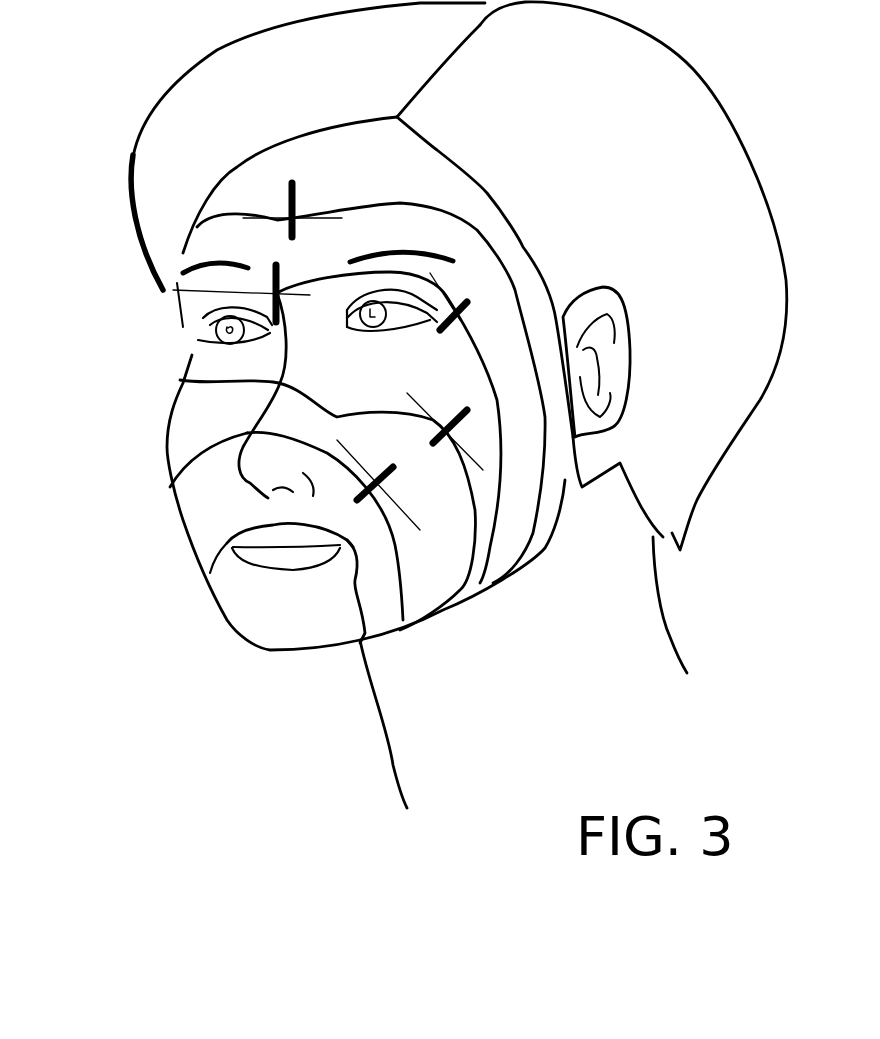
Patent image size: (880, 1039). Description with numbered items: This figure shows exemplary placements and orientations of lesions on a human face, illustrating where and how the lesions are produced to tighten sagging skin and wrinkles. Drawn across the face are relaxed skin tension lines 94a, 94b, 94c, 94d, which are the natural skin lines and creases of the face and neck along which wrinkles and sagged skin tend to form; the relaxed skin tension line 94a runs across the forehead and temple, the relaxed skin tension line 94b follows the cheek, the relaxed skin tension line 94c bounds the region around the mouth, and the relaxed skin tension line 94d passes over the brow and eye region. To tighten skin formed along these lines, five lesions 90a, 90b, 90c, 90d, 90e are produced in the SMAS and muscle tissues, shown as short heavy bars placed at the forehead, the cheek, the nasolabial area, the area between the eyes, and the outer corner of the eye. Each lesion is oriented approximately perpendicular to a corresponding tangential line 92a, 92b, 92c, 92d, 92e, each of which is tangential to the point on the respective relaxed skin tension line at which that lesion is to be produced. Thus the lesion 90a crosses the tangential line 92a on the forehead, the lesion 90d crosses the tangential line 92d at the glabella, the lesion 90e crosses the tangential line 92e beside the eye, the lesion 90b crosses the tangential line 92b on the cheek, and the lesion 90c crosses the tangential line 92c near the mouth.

The lesion 90a is at (297, 197).
The tangential line 92a is at (336, 217).
The lesion 90d is at (273, 284).
The tangential line 92d is at (173, 290).
The lesion 90e is at (470, 300).
The tangential line 92e is at (450, 298).
The lesion 90b is at (467, 413).
The tangential line 92b is at (423, 407).
The lesion 90c is at (388, 477).
The tangential line 92c is at (357, 463).
The relaxed skin tension line 94a is at (413, 203).
The relaxed skin tension line 94b is at (367, 410).
The relaxed skin tension line 94c is at (400, 570).
The relaxed skin tension line 94d is at (430, 273).